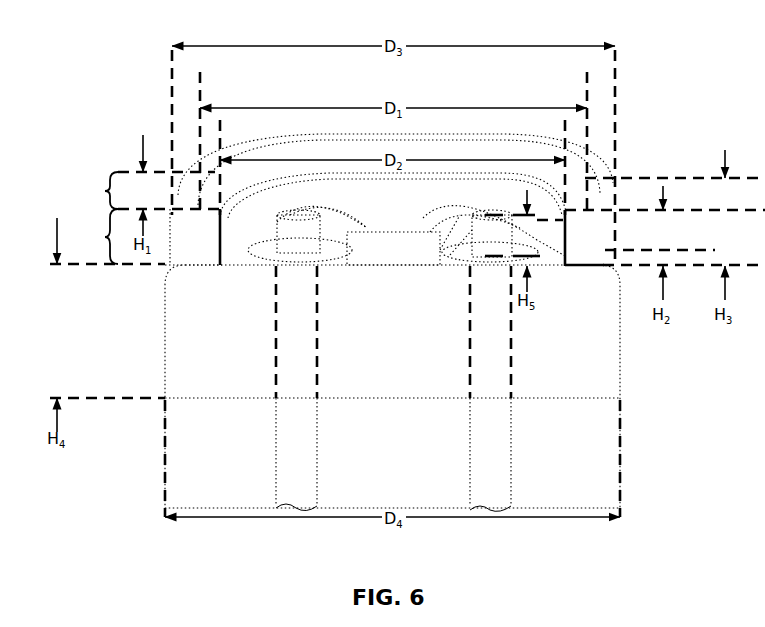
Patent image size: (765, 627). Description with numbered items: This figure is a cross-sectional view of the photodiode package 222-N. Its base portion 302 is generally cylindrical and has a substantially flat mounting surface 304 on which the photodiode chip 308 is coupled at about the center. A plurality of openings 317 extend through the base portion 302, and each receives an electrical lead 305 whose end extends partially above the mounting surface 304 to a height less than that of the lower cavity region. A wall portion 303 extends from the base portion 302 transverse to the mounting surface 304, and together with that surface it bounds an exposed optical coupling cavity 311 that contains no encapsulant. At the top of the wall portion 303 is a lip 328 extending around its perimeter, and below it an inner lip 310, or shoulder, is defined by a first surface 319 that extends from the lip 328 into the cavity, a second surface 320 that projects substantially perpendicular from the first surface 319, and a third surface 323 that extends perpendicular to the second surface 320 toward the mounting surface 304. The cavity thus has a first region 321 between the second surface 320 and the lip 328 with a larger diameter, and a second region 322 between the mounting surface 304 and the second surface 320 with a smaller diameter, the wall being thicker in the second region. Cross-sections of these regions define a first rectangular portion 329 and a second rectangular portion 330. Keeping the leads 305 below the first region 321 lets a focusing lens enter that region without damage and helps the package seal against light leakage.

The photodiode package 222-N is at (110, 60).
The base portion 302 is at (608, 345).
The wall portion 303 is at (607, 250).
The mounting surface 304 is at (232, 252).
The electrical lead 305 is at (280, 467).
The photodiode chip 308 is at (312, 205).
The inner lip 310 is at (289, 194).
The optical coupling cavity 311 is at (328, 156).
The openings 317 is at (318, 350).
The first surface 319 is at (533, 165).
The second surface 320 is at (478, 176).
The first region 321 is at (143, 190).
The second region 322 is at (143, 236).
The third surface 323 is at (428, 194).
The lip 328 is at (603, 167).
The first rectangular portion 329 is at (186, 197).
The second rectangular portion 330 is at (193, 237).